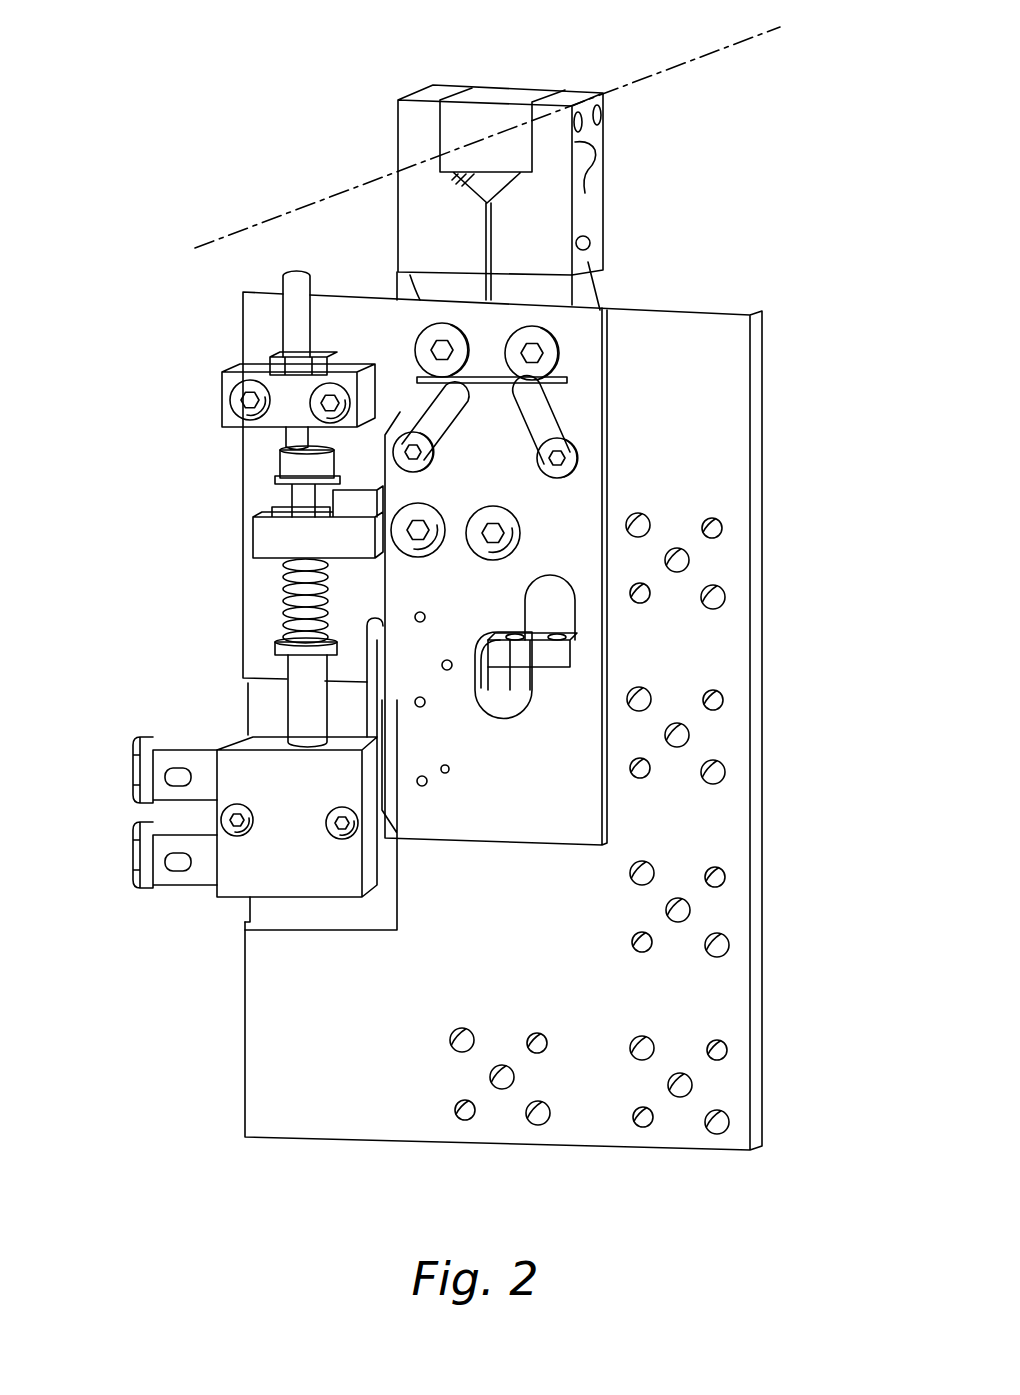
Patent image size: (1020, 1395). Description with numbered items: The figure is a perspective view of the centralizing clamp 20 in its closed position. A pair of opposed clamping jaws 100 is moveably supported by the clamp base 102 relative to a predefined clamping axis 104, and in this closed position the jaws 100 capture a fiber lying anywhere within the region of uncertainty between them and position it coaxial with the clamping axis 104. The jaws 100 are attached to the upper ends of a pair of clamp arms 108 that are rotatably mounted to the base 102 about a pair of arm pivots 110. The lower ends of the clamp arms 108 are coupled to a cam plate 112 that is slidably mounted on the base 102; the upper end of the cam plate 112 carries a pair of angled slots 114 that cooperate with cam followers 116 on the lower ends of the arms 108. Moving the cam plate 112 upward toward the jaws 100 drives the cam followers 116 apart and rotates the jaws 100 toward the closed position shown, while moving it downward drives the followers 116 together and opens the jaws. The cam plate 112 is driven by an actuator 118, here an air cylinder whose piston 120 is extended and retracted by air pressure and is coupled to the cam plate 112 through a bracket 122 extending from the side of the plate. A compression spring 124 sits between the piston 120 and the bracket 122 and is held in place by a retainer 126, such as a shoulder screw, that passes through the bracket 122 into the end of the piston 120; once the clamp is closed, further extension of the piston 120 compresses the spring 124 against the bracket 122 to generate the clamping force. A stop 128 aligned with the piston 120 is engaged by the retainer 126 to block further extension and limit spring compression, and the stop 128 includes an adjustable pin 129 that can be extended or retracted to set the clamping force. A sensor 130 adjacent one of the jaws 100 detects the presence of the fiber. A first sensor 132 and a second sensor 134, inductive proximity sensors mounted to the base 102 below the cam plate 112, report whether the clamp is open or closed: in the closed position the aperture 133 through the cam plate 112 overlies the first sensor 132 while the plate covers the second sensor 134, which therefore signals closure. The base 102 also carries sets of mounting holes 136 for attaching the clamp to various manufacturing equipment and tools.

The centralizing clamp 20 is at (140, 277).
The clamping jaws 100 is at (477, 113).
The clamp base 102 is at (268, 1060).
The clamping axis 104 is at (682, 64).
The clamp arms 108 is at (412, 135).
The arm pivots 110 is at (440, 330).
The cam plate 112 is at (590, 818).
The angled slots 114 is at (437, 415).
The cam followers 116 is at (405, 440).
The actuator 118 is at (248, 762).
The piston 120 is at (292, 712).
The bracket 122 is at (272, 540).
The compression spring 124 is at (290, 598).
The retainer 126 is at (292, 478).
The stop 128 is at (279, 424).
The adjustable pin 129 is at (285, 322).
The sensor 130 is at (596, 150).
The first sensor 132 is at (517, 678).
The aperture 133 is at (565, 598).
The second sensor 134 is at (572, 655).
The mounting holes 136 is at (722, 772).